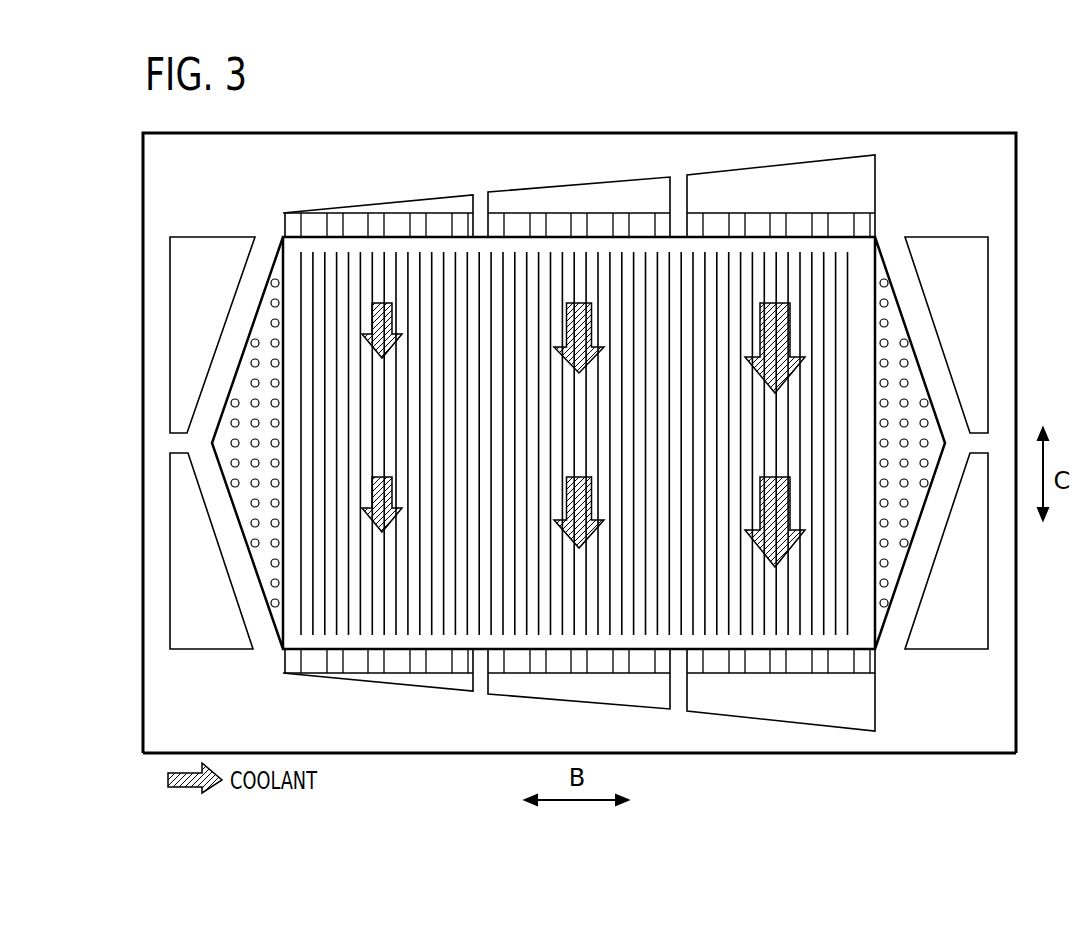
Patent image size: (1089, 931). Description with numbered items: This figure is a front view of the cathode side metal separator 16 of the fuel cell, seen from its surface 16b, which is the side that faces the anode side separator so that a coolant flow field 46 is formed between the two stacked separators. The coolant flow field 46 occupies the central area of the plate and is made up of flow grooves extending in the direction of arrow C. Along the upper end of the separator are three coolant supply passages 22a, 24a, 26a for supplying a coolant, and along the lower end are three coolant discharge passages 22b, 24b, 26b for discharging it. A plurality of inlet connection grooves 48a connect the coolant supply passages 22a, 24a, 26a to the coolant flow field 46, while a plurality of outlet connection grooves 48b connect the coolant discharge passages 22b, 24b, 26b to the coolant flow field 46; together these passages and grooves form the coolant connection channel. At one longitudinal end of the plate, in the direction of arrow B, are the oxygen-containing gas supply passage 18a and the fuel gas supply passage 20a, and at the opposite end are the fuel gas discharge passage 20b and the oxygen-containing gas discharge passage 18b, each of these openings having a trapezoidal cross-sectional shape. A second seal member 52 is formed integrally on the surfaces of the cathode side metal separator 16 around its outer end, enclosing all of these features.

The cathode side metal separator 16 is at (369, 115).
The surface of the cathode side metal separator 16b is at (928, 737).
The oxygen-containing gas supply passage 18a is at (946, 335).
The oxygen-containing gas discharge passage 18b is at (211, 551).
The fuel gas supply passage 20a is at (946, 551).
The fuel gas discharge passage 20b is at (212, 335).
The coolant supply passage 22a is at (781, 184).
The coolant discharge passage 22b is at (781, 702).
The coolant supply passage 24a is at (579, 195).
The coolant discharge passage 24b is at (579, 691).
The coolant supply passage 26a is at (445, 205).
The coolant discharge passage 26b is at (438, 678).
The coolant flow field 46 is at (327, 268).
The inlet connection grooves 48a is at (287, 227).
The outlet connection grooves 48b is at (867, 658).
The second seal member 52 is at (928, 132).